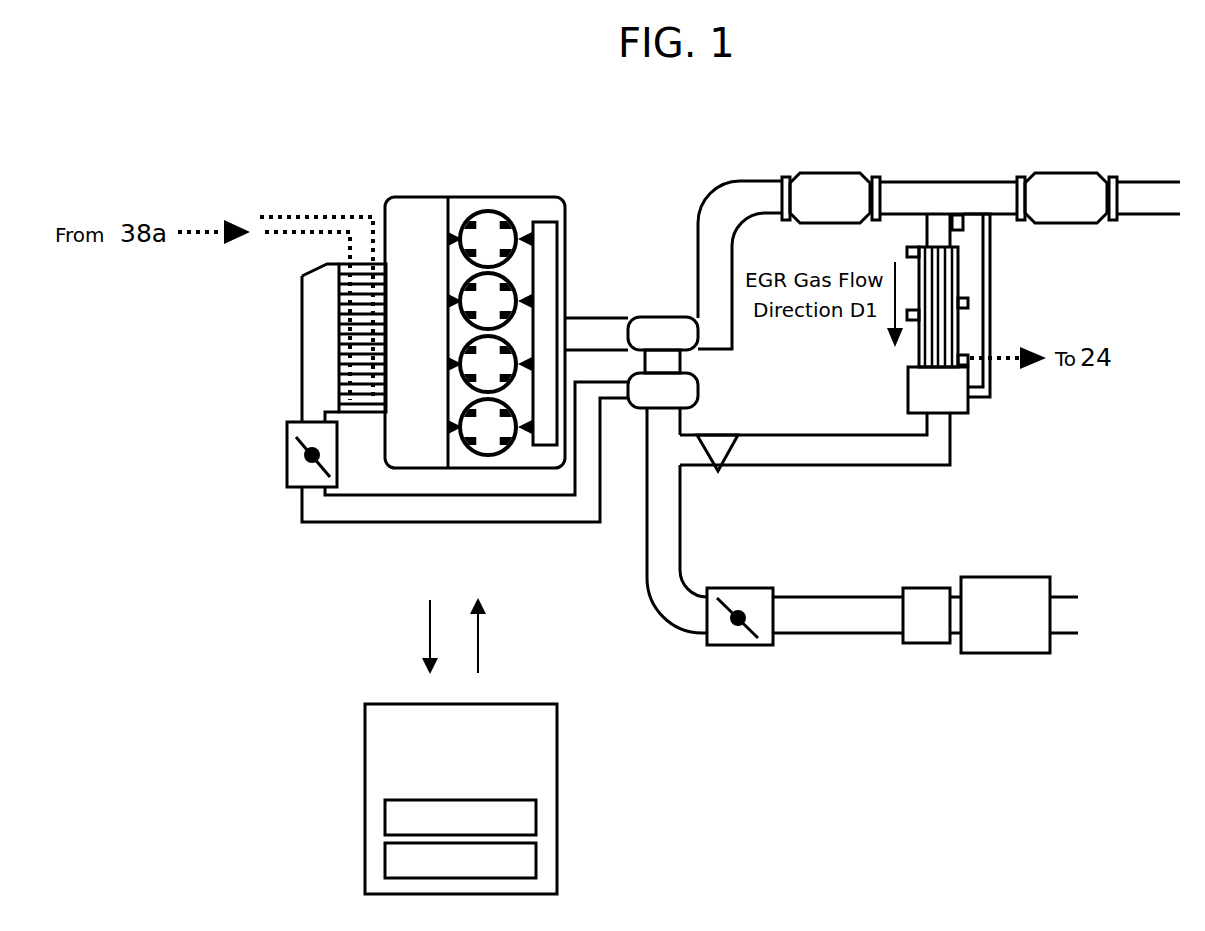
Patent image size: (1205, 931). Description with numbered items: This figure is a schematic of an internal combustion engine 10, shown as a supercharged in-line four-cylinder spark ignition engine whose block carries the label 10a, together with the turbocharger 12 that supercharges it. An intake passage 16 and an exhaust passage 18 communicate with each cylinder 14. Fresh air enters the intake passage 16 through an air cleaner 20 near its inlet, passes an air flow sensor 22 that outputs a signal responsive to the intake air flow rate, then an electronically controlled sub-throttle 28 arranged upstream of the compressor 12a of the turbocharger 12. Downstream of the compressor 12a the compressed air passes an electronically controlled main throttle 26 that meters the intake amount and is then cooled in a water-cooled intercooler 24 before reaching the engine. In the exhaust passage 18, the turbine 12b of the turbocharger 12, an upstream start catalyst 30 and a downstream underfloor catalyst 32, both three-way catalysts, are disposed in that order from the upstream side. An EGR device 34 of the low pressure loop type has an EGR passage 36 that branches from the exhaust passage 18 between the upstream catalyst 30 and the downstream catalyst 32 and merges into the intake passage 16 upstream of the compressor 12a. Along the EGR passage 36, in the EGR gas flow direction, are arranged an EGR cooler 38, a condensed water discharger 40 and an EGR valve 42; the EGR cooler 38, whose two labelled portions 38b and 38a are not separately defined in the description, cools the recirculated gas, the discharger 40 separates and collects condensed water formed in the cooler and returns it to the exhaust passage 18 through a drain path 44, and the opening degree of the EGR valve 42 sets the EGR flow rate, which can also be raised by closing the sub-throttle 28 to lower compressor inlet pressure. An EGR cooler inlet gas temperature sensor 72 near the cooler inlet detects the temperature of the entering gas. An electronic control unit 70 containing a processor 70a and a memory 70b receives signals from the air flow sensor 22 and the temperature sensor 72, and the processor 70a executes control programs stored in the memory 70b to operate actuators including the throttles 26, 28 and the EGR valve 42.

The internal combustion engine 10 is at (1070, 107).
The engine body 10a is at (537, 196).
The turbocharger 12 is at (598, 252).
The compressor 12a is at (632, 373).
The turbine 12b is at (652, 317).
The cylinder 14 is at (488, 208).
The intake passage 16 is at (482, 523).
The exhaust passage 18 is at (718, 195).
The air cleaner 20 is at (1002, 577).
The air flow sensor 22 is at (918, 588).
The intercooler 24 is at (339, 333).
The main throttle 26 is at (294, 487).
The sub-throttle 28 is at (737, 588).
The upstream catalyst 30 is at (823, 173).
The downstream catalyst 32 is at (1057, 170).
The EGR device 34 is at (948, 477).
The EGR passage 36 is at (812, 435).
The EGR cooler 38 is at (1015, 290).
The EGR cooler outlet portion 38a is at (960, 325).
The EGR cooler inlet portion 38b is at (960, 273).
The condensed water discharger 40 is at (960, 413).
The EGR valve 42 is at (717, 443).
The drain path 44 is at (992, 230).
The electronic control unit 70 is at (445, 746).
The processor 70a is at (385, 818).
The memory 70b is at (385, 860).
The EGR cooler inlet gas temperature sensor 72 is at (958, 217).